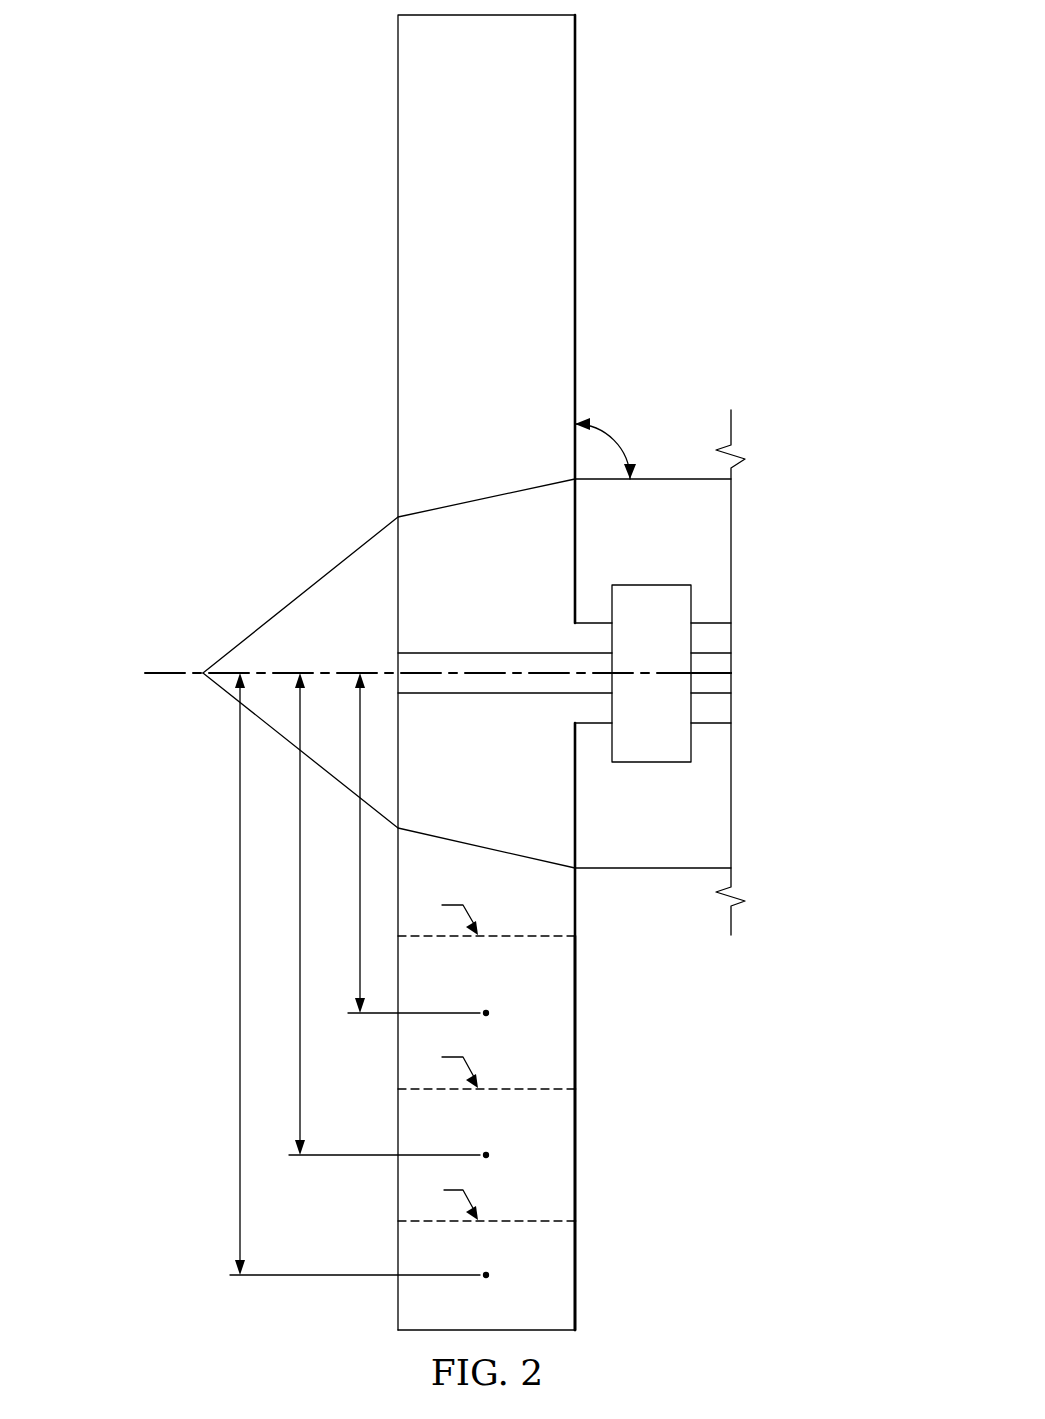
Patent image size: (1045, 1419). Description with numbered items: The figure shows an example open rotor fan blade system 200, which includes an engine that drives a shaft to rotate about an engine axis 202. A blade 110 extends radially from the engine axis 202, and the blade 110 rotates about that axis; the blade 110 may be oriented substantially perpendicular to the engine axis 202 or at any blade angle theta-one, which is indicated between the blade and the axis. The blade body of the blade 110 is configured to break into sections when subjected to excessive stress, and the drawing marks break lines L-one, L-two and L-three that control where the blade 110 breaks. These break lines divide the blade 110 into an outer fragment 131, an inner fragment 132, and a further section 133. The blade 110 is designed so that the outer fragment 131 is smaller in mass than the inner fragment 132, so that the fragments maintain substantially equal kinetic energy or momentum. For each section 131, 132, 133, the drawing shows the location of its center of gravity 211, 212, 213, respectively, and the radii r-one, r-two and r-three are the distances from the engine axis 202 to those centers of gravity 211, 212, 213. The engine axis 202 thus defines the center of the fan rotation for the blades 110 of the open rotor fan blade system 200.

The open rotor fan blade system 200 is at (250, 182).
The blade 110 is at (397, 334).
The engine axis 202 is at (162, 670).
The center of gravity 211 is at (491, 1280).
The center of gravity 212 is at (491, 1160).
The center of gravity 213 is at (491, 1018).
The outer fragment 131 is at (567, 1277).
The inner fragment 132 is at (567, 1158).
The section 133 is at (567, 1015).